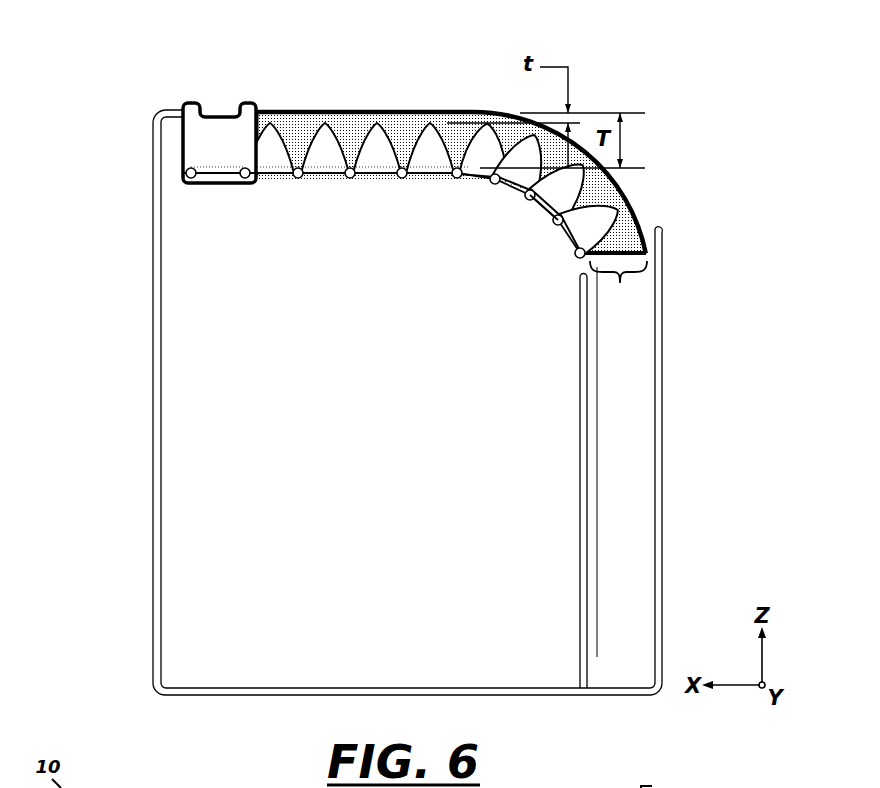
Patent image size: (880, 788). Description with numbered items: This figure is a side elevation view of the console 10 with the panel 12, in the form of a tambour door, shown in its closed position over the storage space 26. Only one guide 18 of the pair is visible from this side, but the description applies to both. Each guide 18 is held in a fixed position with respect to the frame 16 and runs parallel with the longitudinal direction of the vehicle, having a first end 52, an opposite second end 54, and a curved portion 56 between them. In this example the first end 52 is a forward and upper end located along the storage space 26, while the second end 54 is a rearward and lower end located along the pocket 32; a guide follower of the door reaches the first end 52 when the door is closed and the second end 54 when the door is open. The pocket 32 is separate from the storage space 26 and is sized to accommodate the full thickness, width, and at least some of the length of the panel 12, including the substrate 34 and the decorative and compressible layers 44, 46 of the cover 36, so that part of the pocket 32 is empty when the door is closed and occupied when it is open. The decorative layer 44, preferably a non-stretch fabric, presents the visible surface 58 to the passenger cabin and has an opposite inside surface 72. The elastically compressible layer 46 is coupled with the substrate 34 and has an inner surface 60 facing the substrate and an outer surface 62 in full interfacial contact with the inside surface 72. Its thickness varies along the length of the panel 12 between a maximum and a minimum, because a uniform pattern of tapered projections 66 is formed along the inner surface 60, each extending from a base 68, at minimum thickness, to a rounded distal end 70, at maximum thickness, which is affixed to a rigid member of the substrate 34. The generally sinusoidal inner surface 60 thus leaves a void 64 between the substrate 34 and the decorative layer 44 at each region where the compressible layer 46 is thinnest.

The console 10 is at (84, 232).
The panel 12 is at (472, 143).
The frame 16 is at (195, 693).
The guide 18 is at (595, 362).
The storage space 26 is at (379, 576).
The pocket 32 is at (622, 471).
The substrate 34 is at (468, 178).
The cover 36 is at (618, 288).
The decorative layer 44 is at (283, 110).
The elastically compressible layer 46 is at (393, 123).
The first end 52 is at (205, 182).
The second end 54 is at (593, 648).
The curved portion 56 is at (543, 218).
The visible surface 58 is at (378, 112).
The inner surface 60 is at (288, 152).
The outer surface 62 is at (253, 112).
The void 64 is at (428, 140).
The projection 66 is at (352, 152).
The base 68 is at (325, 122).
The distal end 70 is at (398, 167).
The inside surface 72 is at (298, 110).